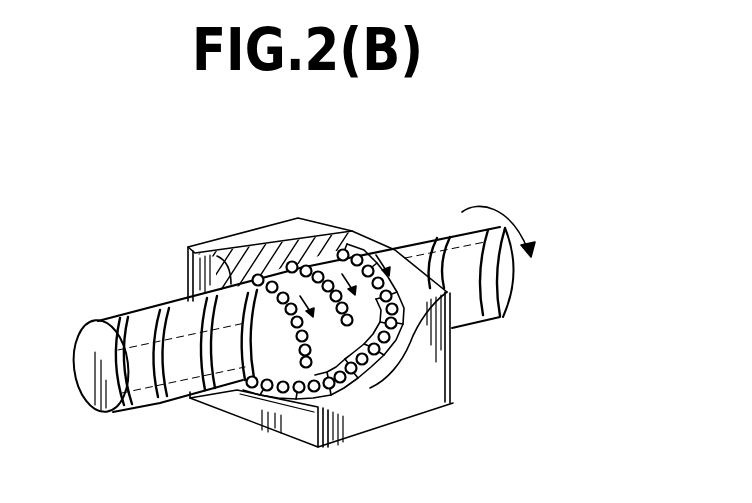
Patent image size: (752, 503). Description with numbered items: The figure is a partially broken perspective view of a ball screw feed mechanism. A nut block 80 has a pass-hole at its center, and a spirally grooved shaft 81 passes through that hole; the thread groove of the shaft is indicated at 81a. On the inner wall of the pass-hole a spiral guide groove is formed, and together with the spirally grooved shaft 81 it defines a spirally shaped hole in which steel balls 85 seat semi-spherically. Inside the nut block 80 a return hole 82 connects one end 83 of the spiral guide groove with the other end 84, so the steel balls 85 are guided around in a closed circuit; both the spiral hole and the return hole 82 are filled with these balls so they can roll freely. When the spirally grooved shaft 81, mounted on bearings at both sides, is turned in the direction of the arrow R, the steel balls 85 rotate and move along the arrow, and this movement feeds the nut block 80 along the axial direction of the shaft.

The nut block 80 is at (307, 228).
The spirally grooved shaft 81 is at (512, 298).
The screw groove 81a is at (162, 309).
The return hole 82 is at (343, 412).
The one end of the spiral guide groove 83 is at (400, 262).
The other end of the spiral guide groove 84 is at (233, 404).
The steel balls 85 is at (367, 395).
The direction of rotation arrow R is at (520, 222).